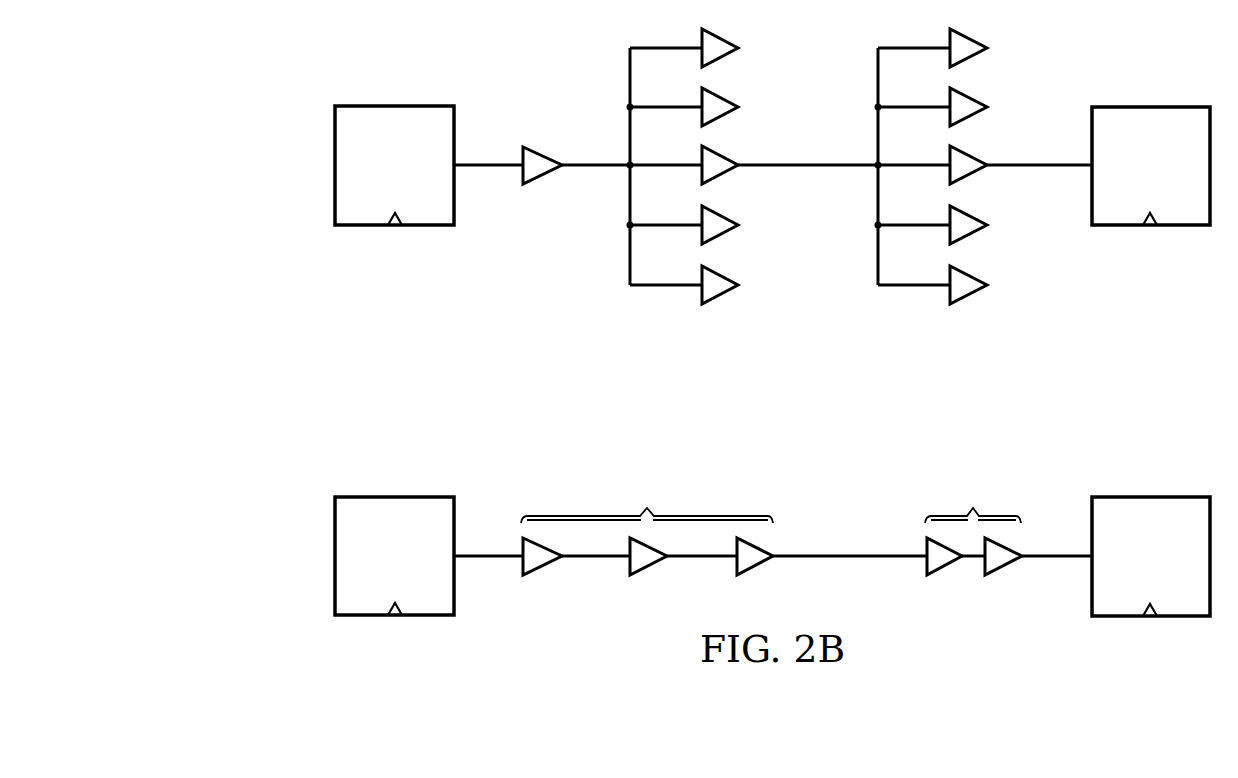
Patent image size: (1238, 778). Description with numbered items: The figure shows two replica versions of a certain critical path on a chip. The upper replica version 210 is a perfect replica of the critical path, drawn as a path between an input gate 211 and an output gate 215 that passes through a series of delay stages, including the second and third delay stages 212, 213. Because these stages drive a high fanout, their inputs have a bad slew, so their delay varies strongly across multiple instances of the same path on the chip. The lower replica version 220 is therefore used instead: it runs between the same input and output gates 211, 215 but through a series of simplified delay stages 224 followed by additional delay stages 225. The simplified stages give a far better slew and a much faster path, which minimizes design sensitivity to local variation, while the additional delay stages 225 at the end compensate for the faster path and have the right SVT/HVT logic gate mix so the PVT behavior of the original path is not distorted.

The replica version 210 is at (627, 212).
The input gate 211 is at (393, 104).
The second delay stage 212 is at (665, 321).
The third delay stage 213 is at (926, 321).
The output gate 215 is at (1152, 105).
The replica version 220 is at (627, 554).
The simplified delay stages 224 is at (647, 525).
The additional delay stages 225 is at (973, 525).